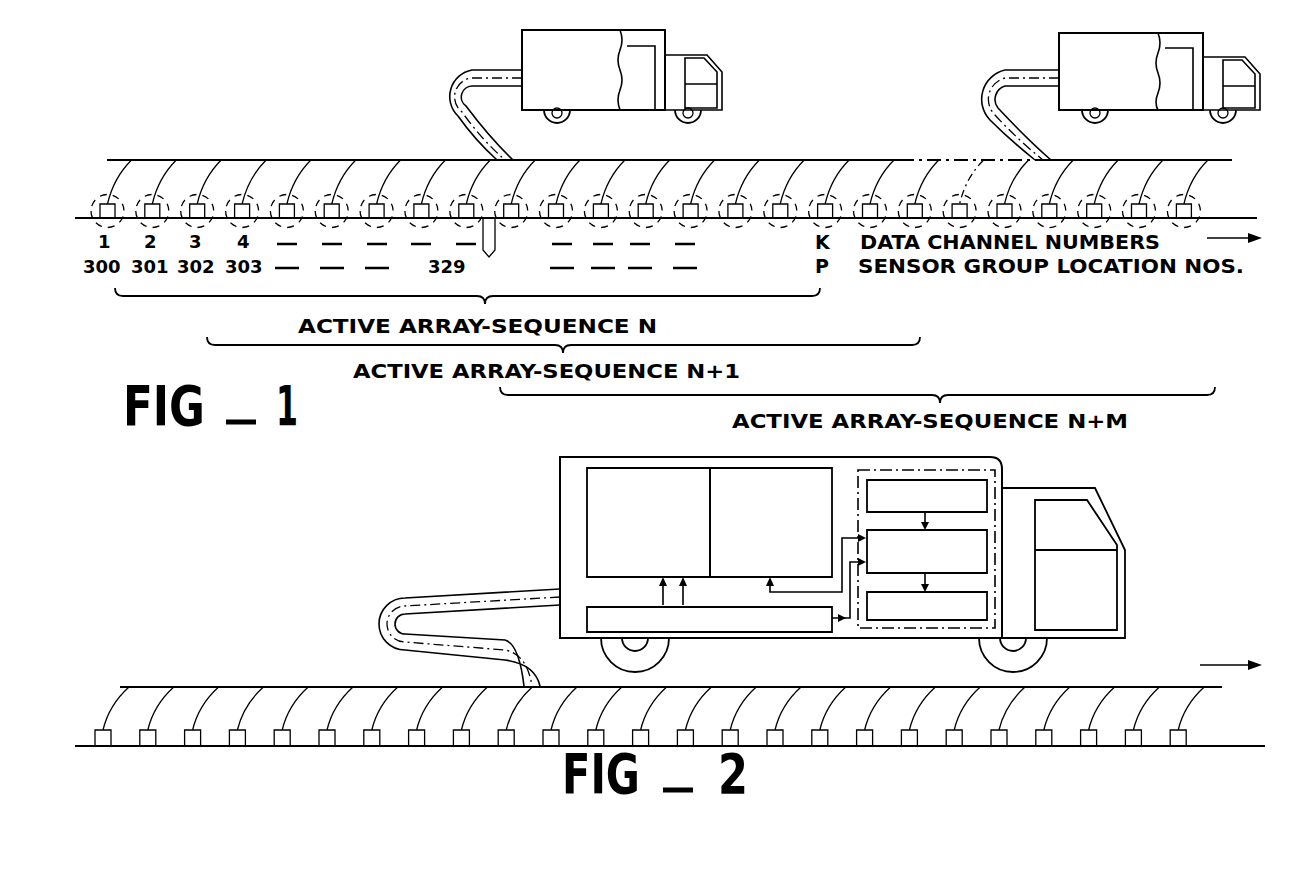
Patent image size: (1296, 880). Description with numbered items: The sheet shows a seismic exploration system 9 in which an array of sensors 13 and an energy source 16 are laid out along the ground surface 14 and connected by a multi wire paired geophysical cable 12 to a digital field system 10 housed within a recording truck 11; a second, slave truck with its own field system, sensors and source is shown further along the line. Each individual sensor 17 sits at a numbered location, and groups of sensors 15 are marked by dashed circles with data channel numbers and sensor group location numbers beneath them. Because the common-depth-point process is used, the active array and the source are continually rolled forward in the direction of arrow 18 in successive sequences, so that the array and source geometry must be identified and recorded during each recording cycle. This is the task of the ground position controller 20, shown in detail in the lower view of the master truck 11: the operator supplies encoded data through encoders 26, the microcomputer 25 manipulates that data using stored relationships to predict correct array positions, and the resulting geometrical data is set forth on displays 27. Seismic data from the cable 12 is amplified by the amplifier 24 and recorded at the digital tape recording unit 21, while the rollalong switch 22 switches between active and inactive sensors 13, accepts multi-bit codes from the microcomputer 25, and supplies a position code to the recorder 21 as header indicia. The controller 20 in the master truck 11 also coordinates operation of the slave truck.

In FIG. 1, the seismic exploration system 9 is at (720, 131).
In FIG. 1, the digital field system 10 is at (862, 71).
In FIG. 2, the digital field system 10 is at (582, 499).
In FIG. 1, the recording truck 11 is at (703, 68).
In FIG. 2, the recording truck 11 is at (1126, 590).
In FIG. 1, the multi wire paired geophysical cable 12 is at (427, 103).
In FIG. 2, the multi wire paired geophysical cable 12 is at (366, 604).
In FIG. 1, the sensors 13 is at (915, 204).
In FIG. 1, the ground surface 14 is at (78, 210).
In FIG. 2, the ground surface 14 is at (84, 738).
In FIG. 1, the sensor group 15 is at (137, 200).
In FIG. 1, the source 16 is at (508, 260).
In FIG. 1, the sensor 17 is at (1240, 210).
In FIG. 1, the arrow 18 is at (1230, 246).
In FIG. 2, the arrow 18 is at (1207, 665).
In FIG. 1, the ground position controller 20 is at (643, 83).
In FIG. 2, the ground position controller 20 is at (1035, 533).
In FIG. 2, the digital tape recording unit 21 is at (763, 468).
In FIG. 2, the rollalong switch 22 is at (752, 633).
In FIG. 2, the amplifier 24 is at (684, 468).
In FIG. 2, the microcomputer 25 is at (987, 553).
In FIG. 2, the encoders 26 is at (912, 480).
In FIG. 2, the displays 27 is at (987, 606).